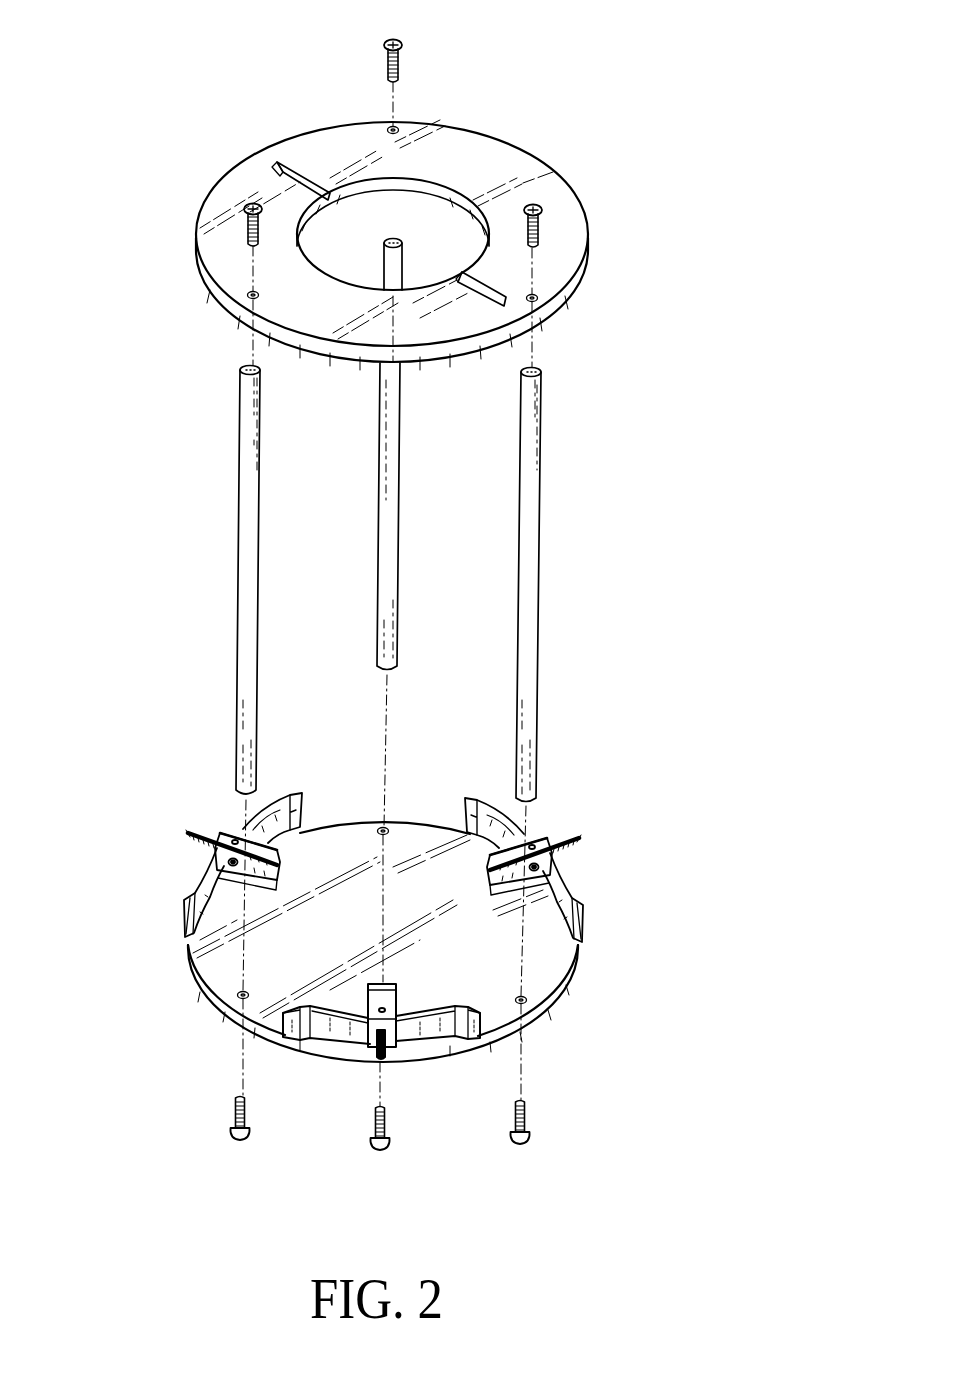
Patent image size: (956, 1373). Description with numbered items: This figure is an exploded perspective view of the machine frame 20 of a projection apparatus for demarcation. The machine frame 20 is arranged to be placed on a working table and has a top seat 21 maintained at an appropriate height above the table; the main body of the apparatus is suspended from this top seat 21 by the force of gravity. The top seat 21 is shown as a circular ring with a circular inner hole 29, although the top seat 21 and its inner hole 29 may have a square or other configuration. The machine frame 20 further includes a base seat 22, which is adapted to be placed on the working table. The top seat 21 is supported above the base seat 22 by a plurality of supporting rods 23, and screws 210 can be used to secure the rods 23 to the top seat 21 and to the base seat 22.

The machine frame 20 is at (166, 191).
The top seat 21 is at (571, 246).
The base seat 22 is at (551, 964).
The supporting rods 23 is at (246, 571).
The inner hole 29 is at (438, 222).
The screws 210 is at (403, 46).